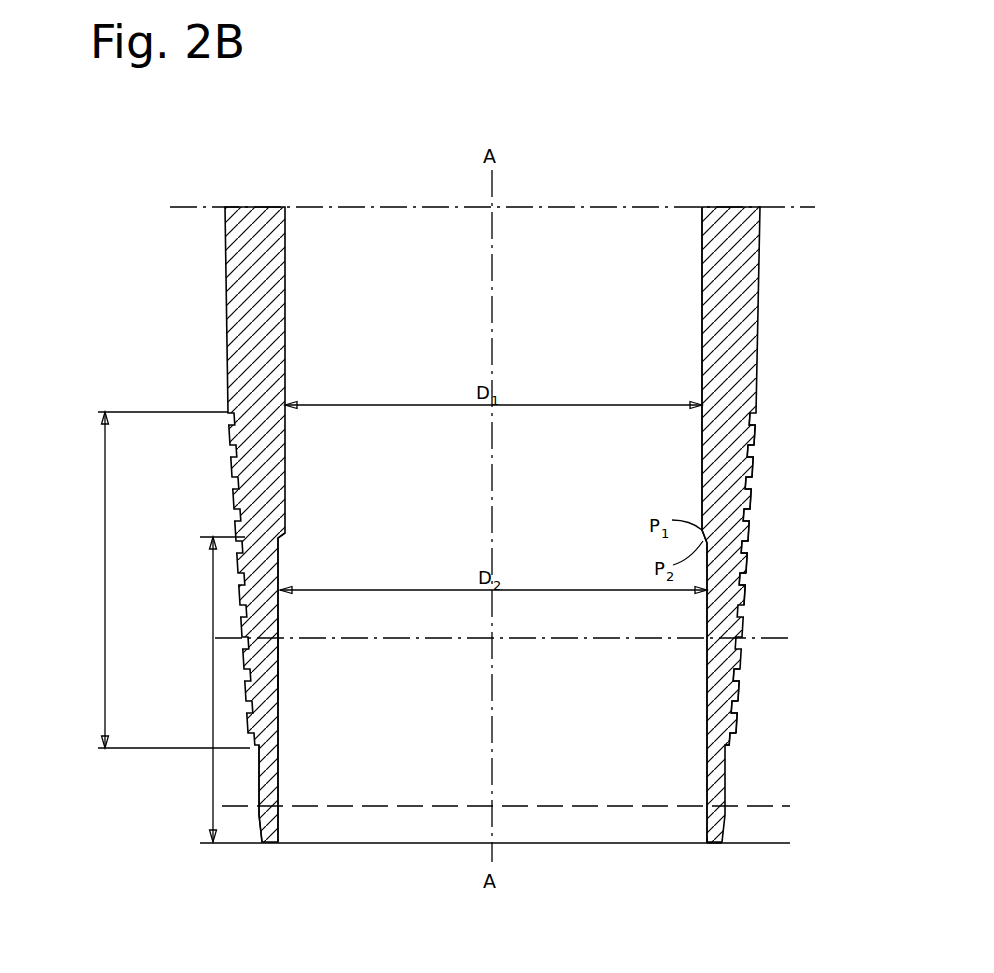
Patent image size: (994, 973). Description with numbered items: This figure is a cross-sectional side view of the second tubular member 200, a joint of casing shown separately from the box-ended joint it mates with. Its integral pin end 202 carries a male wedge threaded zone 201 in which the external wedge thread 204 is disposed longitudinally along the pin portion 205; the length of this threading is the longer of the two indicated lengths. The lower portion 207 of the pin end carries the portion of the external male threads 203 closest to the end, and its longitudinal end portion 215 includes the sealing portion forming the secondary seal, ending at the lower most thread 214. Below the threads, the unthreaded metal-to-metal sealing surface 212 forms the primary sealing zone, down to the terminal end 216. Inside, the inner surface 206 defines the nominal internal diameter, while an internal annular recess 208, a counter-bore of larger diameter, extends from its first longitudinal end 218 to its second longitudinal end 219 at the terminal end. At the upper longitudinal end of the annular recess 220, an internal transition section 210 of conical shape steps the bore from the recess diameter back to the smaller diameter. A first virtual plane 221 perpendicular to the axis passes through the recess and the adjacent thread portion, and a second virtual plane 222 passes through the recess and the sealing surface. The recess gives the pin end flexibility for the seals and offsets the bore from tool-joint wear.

The second tubular member 200 is at (745, 250).
The male wedge threaded zone 201 is at (767, 582).
The pin end 202 is at (660, 682).
The portion of the external male threads 203 is at (180, 537).
The external wedge thread 204 is at (752, 538).
The pin portion 205 is at (75, 412).
The inner surface 206 is at (700, 314).
The lower portion of the integral pin end 207 is at (762, 683).
The internal annular recess 208 is at (280, 672).
The internal transition section 210 is at (285, 535).
The metal-to-metal sealing surface 212 is at (252, 798).
The lower most thread 214 is at (737, 740).
The longitudinal end portion of the external wedge threads 215 is at (766, 717).
The terminal end 216 is at (728, 844).
The first longitudinal end of the recess 218 is at (675, 546).
The second longitudinal end of the recess 219 is at (703, 845).
The upper longitudinal end of the annular recess 220 is at (285, 550).
The first virtual plane 221 is at (745, 638).
The second virtual plane 222 is at (757, 803).